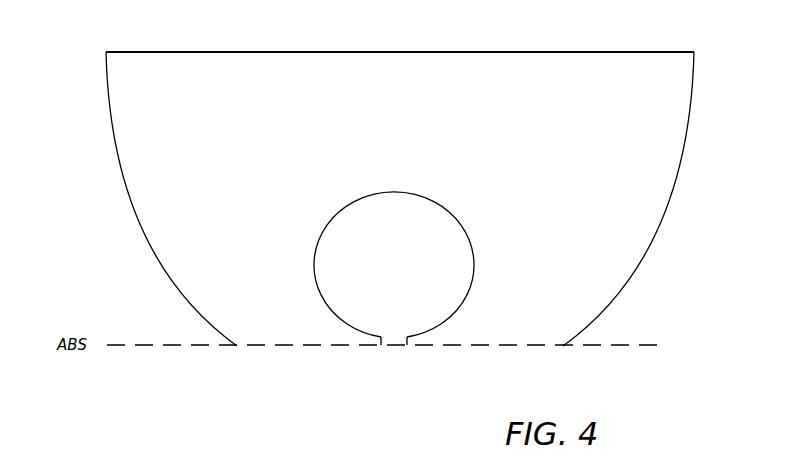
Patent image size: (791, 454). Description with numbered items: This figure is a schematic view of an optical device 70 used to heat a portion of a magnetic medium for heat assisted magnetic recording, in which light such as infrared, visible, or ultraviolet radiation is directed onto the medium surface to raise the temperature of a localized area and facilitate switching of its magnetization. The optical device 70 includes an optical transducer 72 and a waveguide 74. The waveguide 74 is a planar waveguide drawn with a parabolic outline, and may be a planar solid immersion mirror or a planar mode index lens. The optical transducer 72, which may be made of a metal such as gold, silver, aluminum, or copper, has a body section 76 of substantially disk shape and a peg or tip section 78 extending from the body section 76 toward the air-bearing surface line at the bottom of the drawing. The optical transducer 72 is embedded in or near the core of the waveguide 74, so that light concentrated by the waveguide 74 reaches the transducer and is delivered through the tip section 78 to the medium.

The optical device 70 is at (391, 185).
The optical transducer 72 is at (389, 278).
The waveguide 74 is at (675, 104).
The body section 76 is at (428, 216).
The peg or tip section 78 is at (410, 346).